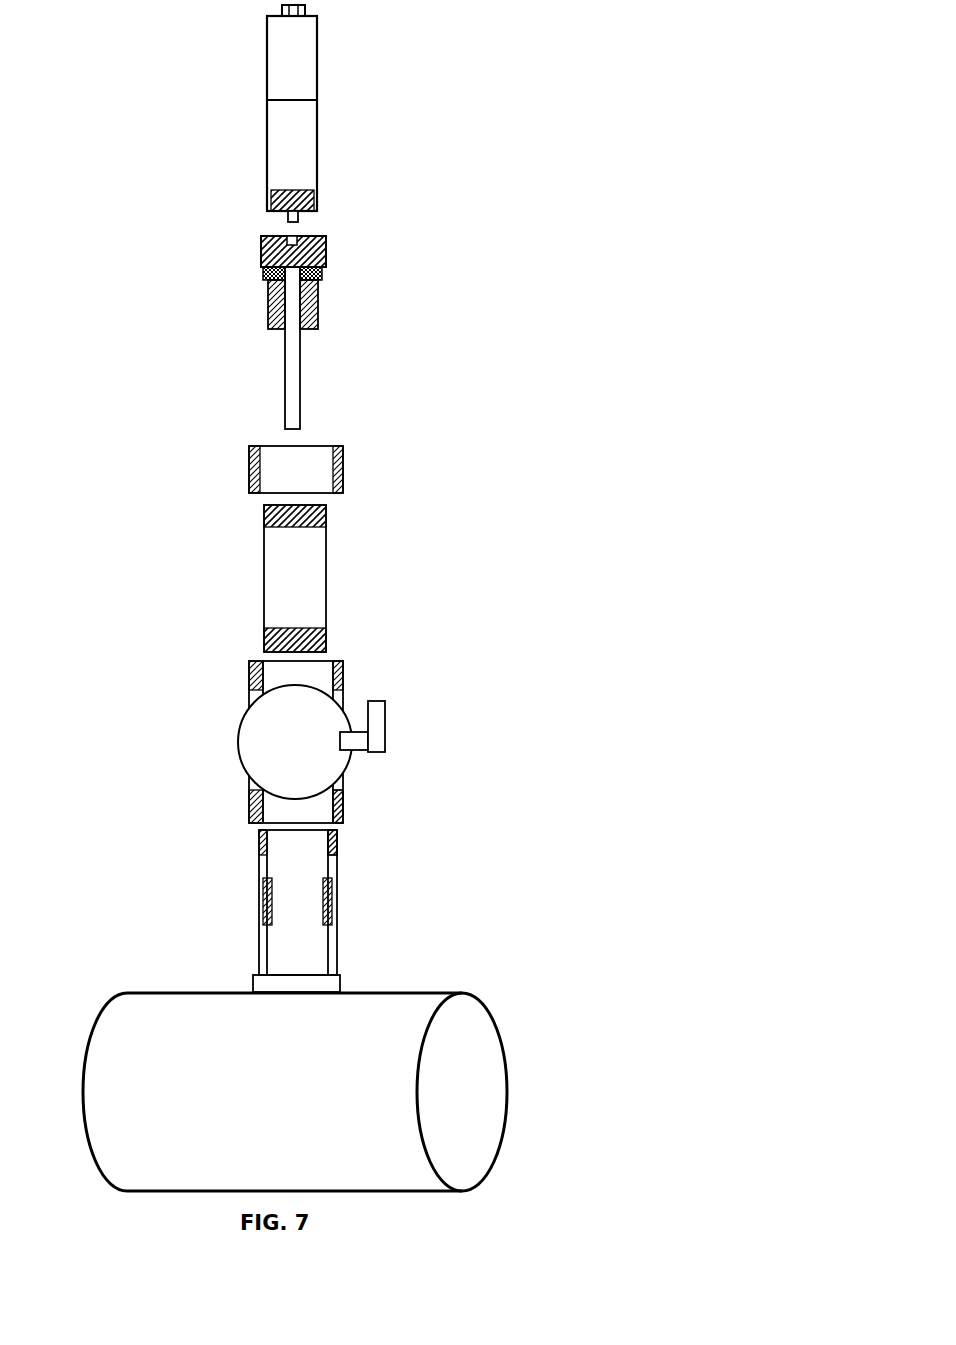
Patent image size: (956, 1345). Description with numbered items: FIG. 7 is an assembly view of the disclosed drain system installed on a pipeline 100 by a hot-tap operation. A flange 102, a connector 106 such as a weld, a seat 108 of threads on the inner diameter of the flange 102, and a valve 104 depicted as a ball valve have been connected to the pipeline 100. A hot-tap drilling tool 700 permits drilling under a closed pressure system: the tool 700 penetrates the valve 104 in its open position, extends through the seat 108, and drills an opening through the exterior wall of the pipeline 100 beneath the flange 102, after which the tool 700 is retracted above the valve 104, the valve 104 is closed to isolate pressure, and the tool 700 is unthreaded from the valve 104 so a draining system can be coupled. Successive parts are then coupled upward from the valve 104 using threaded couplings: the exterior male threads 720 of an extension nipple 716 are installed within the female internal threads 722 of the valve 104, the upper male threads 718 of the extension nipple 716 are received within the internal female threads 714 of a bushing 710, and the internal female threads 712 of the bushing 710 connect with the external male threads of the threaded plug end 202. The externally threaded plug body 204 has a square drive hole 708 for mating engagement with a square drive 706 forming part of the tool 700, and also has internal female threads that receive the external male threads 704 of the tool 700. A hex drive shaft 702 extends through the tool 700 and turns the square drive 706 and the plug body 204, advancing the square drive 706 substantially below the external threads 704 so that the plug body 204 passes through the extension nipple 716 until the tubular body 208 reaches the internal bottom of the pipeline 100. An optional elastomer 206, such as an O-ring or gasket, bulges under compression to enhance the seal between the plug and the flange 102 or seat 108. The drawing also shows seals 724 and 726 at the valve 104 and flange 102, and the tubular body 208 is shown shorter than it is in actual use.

The pipeline 100 is at (467, 1043).
The flange 102 is at (270, 950).
The valve 104 is at (237, 745).
The connection 106 is at (343, 977).
The seat 108 is at (268, 902).
The plug end 202 is at (318, 302).
The externally threaded plug body 204 is at (328, 242).
The elastomer 206 is at (262, 277).
The tubular body 208 is at (300, 400).
The hot-tap drilling tool 700 is at (267, 87).
The hex drive shaft 702 is at (268, 18).
The external male threads 704 is at (305, 195).
The square drive 706 is at (267, 210).
The square drive hole 708 is at (300, 228).
The bushing 710 is at (272, 483).
The internal female threads 712 is at (343, 453).
The internal female threads 714 is at (343, 481).
The extension nipple 716 is at (266, 592).
The upper male threads 718 is at (328, 522).
The exterior male threads 720 is at (328, 630).
The female internal threads 722 is at (343, 693).
The seal ring 724 is at (343, 797).
The seal ring 726 is at (337, 847).